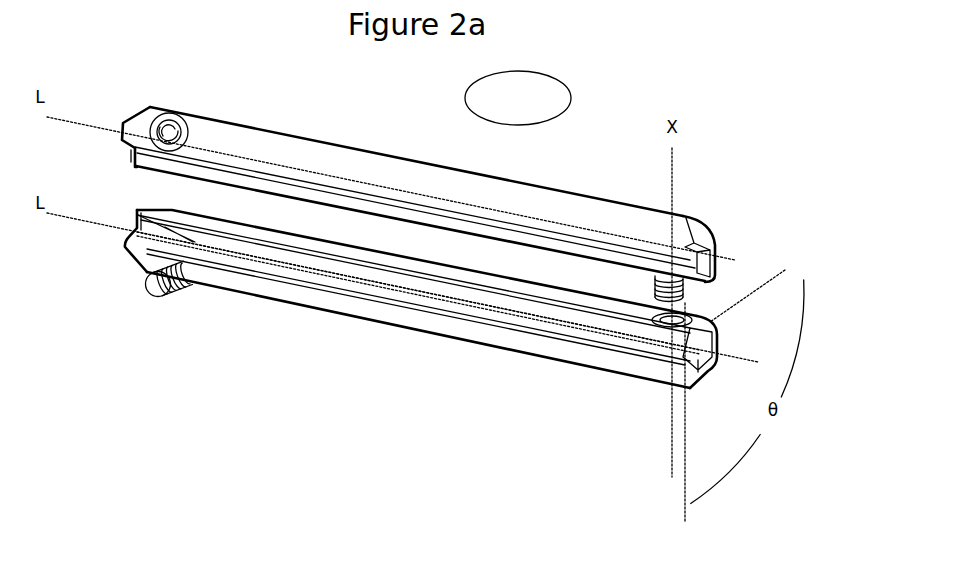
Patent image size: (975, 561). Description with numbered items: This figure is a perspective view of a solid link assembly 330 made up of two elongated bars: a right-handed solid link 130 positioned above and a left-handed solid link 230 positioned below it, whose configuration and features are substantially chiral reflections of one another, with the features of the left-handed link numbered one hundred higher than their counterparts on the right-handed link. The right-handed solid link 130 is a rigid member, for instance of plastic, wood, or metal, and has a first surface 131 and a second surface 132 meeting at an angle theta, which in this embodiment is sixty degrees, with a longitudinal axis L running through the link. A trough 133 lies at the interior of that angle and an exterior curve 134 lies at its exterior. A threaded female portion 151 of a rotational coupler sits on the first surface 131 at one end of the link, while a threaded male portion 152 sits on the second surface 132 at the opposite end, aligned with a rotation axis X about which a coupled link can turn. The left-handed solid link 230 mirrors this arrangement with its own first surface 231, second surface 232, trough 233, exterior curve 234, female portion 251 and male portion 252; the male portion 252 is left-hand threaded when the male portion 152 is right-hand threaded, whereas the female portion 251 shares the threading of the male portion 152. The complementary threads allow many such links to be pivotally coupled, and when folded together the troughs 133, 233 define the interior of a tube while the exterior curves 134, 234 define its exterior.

The right-handed solid link 130 is at (420, 175).
The first surface 131 is at (512, 197).
The second surface 132 is at (412, 222).
The trough 133 is at (147, 163).
The exterior curve 134 is at (688, 217).
The female portion 151 is at (165, 118).
The male portion 152 is at (653, 288).
The left-handed solid link 230 is at (434, 302).
The first surface 231 is at (452, 325).
The second surface 232 is at (230, 234).
The trough 233 is at (137, 212).
The exterior curve 234 is at (620, 373).
The female portion 251 is at (686, 312).
The male portion 252 is at (143, 282).
The solid link assembly 330 is at (518, 98).